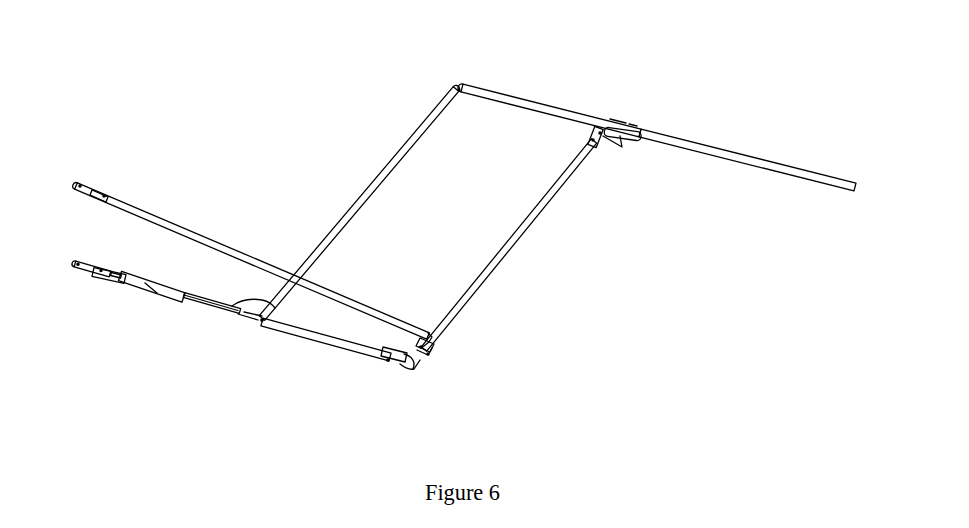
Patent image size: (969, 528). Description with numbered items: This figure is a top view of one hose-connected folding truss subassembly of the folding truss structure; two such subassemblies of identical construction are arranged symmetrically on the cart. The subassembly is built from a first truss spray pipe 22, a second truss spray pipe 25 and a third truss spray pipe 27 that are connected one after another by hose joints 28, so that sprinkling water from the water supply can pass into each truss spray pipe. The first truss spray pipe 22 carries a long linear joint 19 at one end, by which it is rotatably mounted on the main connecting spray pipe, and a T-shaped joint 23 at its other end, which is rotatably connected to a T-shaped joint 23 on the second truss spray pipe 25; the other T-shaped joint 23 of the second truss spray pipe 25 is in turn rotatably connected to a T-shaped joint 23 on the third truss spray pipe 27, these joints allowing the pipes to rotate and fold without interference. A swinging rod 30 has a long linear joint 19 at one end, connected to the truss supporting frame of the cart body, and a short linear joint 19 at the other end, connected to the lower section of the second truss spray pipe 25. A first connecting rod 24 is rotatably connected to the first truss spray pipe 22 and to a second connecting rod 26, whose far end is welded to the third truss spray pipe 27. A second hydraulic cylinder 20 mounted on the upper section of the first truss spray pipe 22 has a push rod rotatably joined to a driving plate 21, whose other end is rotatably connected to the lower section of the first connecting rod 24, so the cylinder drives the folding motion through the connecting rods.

The linear joint 19 is at (207, 447).
The second hydraulic cylinder 20 is at (155, 282).
The driving plate 21 is at (233, 310).
The first truss spray pipe 22 is at (320, 343).
The T-shaped joint 23 is at (800, 447).
The first connecting rod 24 is at (392, 173).
The second truss spray pipe 25 is at (513, 247).
The second connecting rod 26 is at (500, 103).
The third truss spray pipe 27 is at (678, 137).
The hose joint 28 is at (402, 368).
The swinging rod 30 is at (183, 222).